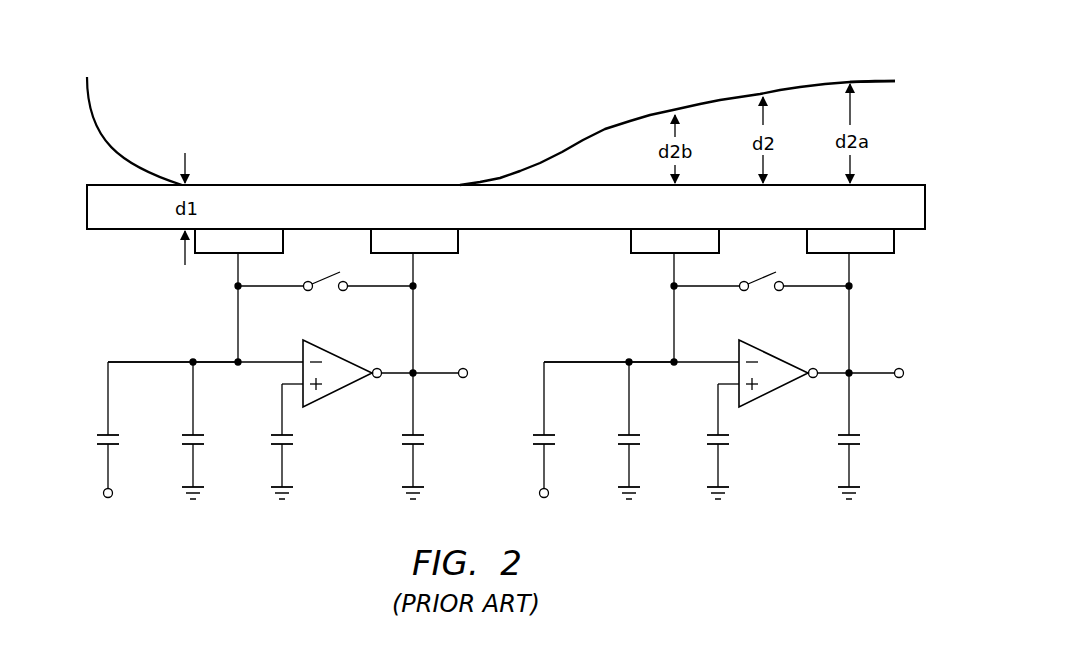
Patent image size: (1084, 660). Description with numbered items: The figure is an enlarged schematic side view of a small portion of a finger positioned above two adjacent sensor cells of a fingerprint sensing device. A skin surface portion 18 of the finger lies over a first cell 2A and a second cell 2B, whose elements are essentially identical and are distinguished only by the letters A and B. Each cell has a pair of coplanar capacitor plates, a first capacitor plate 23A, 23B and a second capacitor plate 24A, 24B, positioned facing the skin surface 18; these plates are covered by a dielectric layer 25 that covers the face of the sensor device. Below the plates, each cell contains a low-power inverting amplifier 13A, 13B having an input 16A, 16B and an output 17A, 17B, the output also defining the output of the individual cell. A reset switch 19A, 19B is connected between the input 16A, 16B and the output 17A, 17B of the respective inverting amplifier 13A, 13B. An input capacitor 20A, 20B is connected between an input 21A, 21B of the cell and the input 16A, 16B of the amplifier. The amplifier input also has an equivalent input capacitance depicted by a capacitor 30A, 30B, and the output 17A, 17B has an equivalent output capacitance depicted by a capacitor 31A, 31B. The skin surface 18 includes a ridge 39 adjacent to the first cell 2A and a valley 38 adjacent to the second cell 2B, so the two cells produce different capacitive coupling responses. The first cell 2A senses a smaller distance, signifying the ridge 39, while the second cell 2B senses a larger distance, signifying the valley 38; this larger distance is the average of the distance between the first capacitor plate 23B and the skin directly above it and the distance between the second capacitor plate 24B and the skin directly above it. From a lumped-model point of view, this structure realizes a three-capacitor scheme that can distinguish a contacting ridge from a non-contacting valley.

The first cell 2A is at (126, 310).
The second cell 2B is at (562, 324).
The inverting amplifier 13A is at (340, 393).
The inverting amplifier 13B is at (776, 393).
The input 16A is at (185, 366).
The input 16B is at (621, 366).
The output 17A is at (434, 380).
The output 17B is at (870, 380).
The skin surface 18 is at (583, 138).
The reset switch 19A is at (327, 290).
The reset switch 19B is at (763, 290).
The input capacitor 20A is at (95, 440).
The input capacitor 20B is at (531, 440).
The input 21A is at (102, 495).
The input 21B is at (538, 495).
The first capacitor plate 23A is at (437, 257).
The first capacitor plate 23B is at (873, 257).
The second capacitor plate 24A is at (215, 257).
The second capacitor plate 24B is at (651, 257).
The dielectric layer 25 is at (893, 185).
The capacitor 30A is at (183, 440).
The capacitor 30B is at (619, 440).
The capacitor 31A is at (403, 440).
The capacitor 31B is at (839, 440).
The valley 38 is at (885, 62).
The ridge 39 is at (323, 176).